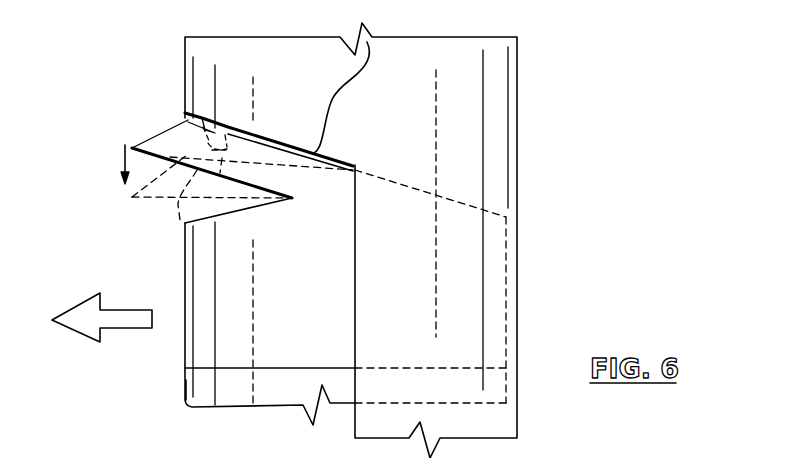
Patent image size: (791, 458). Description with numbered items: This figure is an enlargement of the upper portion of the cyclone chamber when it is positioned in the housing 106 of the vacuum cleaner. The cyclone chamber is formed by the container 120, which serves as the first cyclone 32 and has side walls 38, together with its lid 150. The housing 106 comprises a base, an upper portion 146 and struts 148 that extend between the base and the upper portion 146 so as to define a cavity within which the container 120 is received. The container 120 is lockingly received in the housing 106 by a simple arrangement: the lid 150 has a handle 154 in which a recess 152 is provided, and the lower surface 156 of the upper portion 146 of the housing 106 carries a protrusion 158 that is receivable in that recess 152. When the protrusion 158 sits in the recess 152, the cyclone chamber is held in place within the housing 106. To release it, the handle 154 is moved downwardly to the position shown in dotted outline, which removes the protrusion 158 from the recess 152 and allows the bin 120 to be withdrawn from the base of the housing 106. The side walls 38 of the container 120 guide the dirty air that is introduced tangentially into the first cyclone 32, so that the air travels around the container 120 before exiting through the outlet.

The housing 106 is at (520, 115).
The upper portion 146 is at (485, 143).
The lid 150 is at (473, 262).
The struts 148 is at (512, 292).
The side walls 38 is at (193, 282).
The container 120 is at (187, 380).
The first cyclone 32 is at (120, 366).
The recess 152 is at (180, 220).
The handle 154 is at (163, 140).
The lower surface 156 is at (362, 24).
The protrusion 158 is at (188, 122).